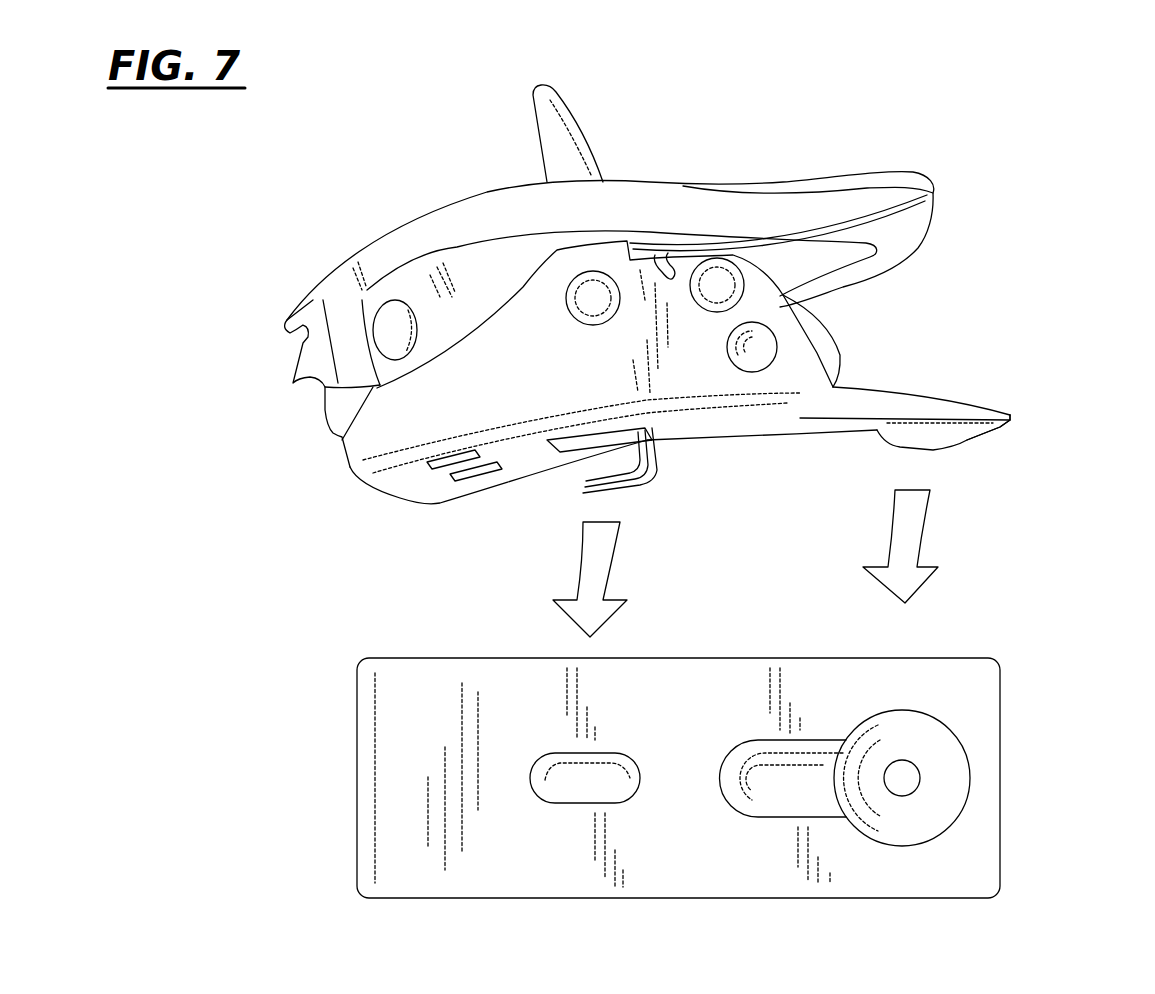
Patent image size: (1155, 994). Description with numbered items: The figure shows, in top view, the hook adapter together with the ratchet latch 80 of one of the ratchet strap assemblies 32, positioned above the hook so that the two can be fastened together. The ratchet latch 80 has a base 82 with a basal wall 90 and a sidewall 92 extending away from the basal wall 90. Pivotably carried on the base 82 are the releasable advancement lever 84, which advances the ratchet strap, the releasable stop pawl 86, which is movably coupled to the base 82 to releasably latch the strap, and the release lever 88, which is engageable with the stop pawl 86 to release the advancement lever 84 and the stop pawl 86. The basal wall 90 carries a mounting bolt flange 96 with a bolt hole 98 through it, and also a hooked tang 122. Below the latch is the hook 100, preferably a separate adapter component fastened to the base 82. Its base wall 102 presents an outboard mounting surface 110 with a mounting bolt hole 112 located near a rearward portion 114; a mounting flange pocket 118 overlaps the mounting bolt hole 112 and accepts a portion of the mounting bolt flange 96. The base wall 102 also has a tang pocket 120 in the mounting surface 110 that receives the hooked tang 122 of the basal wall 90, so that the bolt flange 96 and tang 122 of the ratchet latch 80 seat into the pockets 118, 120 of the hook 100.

The ratchet strap assembly 32 is at (736, 108).
The ratchet latch 80 is at (866, 108).
The base 82 is at (350, 458).
The releasable advancement lever 84 is at (848, 182).
The releasable stop pawl 86 is at (840, 358).
The release lever 88 is at (537, 140).
The basal wall 90 is at (725, 432).
The sidewall 92 is at (548, 381).
The mounting bolt flange 96 is at (893, 442).
The bolt hole 98 is at (933, 451).
The hook 100 is at (726, 617).
The base wall 102 is at (357, 795).
The outboard mounting surface 110 is at (847, 713).
The mounting bolt hole 112 is at (917, 787).
The rearward portion 114 is at (1030, 717).
The mounting flange pocket 118 is at (923, 712).
The tang pocket 120 is at (543, 757).
The hooked tang 122 is at (580, 493).